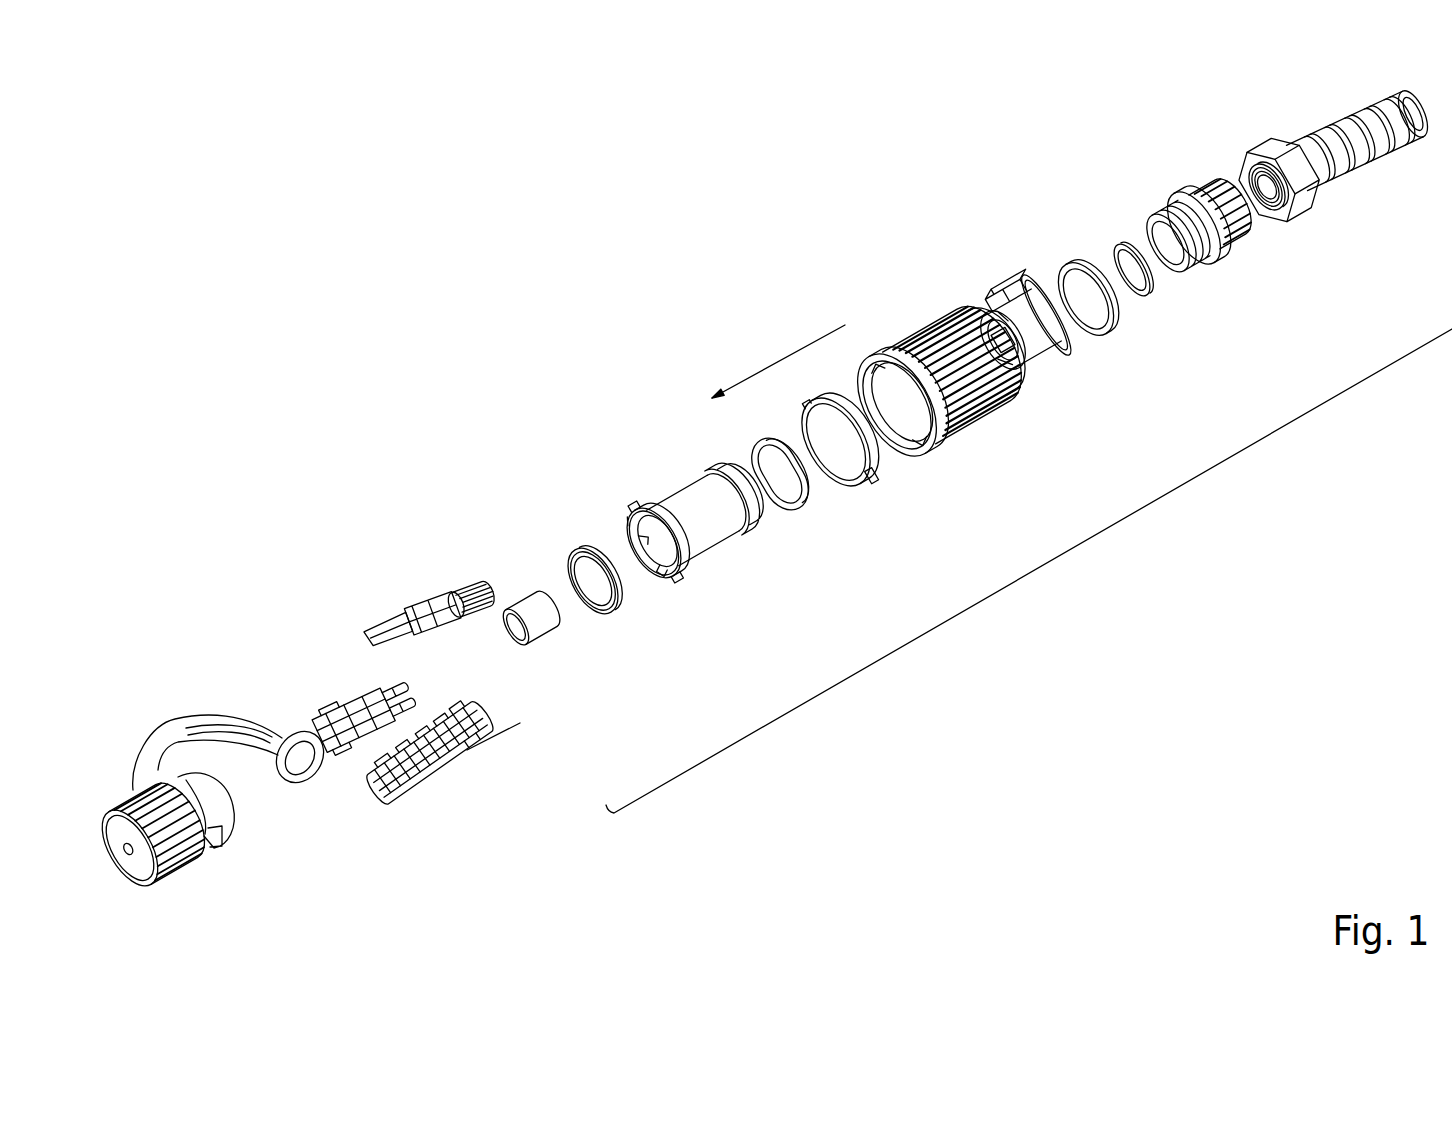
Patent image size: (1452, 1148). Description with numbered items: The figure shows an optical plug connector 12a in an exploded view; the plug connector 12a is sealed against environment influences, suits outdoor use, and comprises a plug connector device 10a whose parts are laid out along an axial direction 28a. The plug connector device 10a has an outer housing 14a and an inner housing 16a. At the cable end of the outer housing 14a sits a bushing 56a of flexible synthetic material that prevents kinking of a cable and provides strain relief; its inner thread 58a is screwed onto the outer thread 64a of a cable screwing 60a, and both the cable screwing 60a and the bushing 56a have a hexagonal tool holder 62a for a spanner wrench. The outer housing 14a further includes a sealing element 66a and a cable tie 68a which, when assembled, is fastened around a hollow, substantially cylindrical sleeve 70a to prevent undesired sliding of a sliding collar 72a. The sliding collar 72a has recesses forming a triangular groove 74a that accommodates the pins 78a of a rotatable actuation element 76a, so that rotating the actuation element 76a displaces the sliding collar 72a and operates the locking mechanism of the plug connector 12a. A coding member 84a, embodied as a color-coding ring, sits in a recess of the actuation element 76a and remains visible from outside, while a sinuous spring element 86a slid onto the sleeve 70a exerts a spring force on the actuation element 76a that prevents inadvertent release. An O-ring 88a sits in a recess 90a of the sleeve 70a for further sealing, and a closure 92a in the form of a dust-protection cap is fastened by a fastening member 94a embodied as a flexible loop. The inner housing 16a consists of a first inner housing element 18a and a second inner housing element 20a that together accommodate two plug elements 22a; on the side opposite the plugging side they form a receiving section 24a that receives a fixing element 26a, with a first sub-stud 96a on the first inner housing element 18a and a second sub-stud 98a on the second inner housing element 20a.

The plug connector device 10a is at (538, 316).
The plug connector 12a is at (1046, 562).
The outer housing 14a is at (895, 256).
The inner housing 16a is at (382, 576).
The first inner housing element 18a is at (440, 594).
The second inner housing element 20a is at (440, 768).
The plug elements 22a is at (350, 690).
The receiving section 24a is at (520, 723).
The fixing element 26a is at (541, 634).
The axial direction 28a is at (773, 340).
The bushing 56a is at (1350, 185).
The inner thread 58a is at (1284, 222).
The cable screwing 60a is at (1214, 259).
The hexagonal tool holder 62a is at (1270, 148).
The outer thread 64a is at (1221, 246).
The sealing element 66a is at (1141, 298).
The cable tie 68a is at (1112, 336).
The sleeve 70a is at (703, 523).
The sliding collar 72a is at (1052, 366).
The triangular groove 74a is at (1030, 367).
The actuation element 76a is at (955, 430).
The pins 78a is at (900, 462).
The coding member 84a is at (870, 487).
The spring element 86a is at (773, 513).
The O-ring 88a is at (602, 616).
The recess 90a is at (623, 513).
The closure 92a is at (135, 860).
The fastening member 94a is at (153, 743).
The first sub-stud 96a is at (480, 585).
The second sub-stud 98a is at (473, 706).